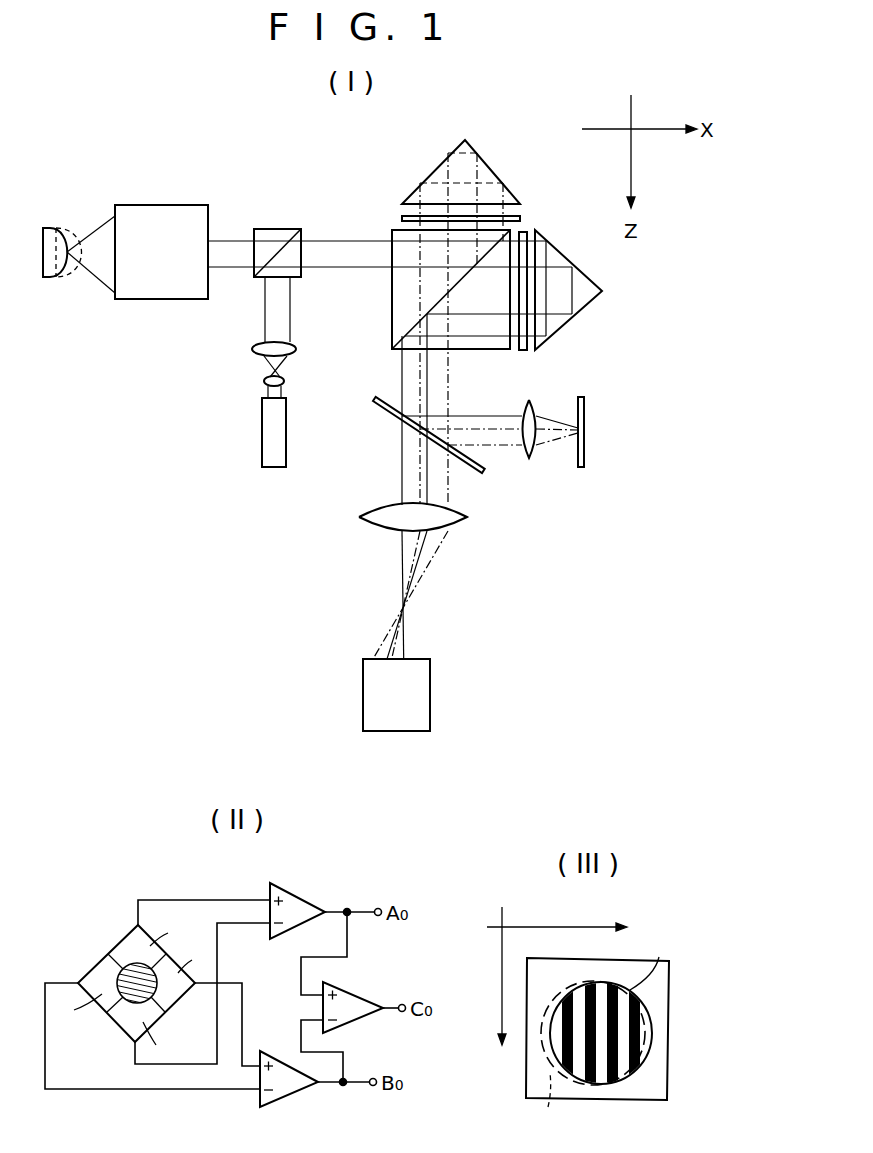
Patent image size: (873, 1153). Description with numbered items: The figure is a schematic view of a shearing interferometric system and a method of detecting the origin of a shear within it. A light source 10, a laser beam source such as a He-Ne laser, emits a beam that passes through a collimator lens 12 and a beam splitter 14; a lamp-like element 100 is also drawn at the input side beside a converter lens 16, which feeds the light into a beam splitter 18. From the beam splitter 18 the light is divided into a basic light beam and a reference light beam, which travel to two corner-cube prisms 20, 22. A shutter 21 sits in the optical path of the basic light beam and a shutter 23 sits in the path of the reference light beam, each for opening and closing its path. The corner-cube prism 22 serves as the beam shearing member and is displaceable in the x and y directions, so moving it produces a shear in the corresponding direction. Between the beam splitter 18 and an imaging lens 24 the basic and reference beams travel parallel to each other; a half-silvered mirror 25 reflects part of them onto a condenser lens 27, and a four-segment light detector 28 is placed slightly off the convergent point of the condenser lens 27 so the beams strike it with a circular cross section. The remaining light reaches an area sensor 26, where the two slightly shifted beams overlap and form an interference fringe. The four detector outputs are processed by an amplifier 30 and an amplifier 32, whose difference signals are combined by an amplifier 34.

The light source lamp 100 is at (56, 232).
The converter lens 16 is at (172, 214).
The beam splitter 14 is at (291, 232).
The corner-cube prism 22 is at (485, 174).
The shutter 23 is at (520, 215).
The beam splitter 18 is at (398, 306).
The corner-cube prism 20 is at (586, 299).
The shutter 21 is at (524, 350).
The collimator lens 12 is at (250, 334).
The light source 10 is at (262, 441).
The half-silvered mirror 25 is at (395, 418).
The condenser lens 27 is at (531, 456).
The four-segment light detector 28 is at (585, 447).
The imaging lens 24 is at (462, 522).
The area sensor 26 is at (368, 680).
The amplifier 30 is at (302, 905).
The amplifier 32 is at (294, 1088).
The amplifier 34 is at (352, 998).